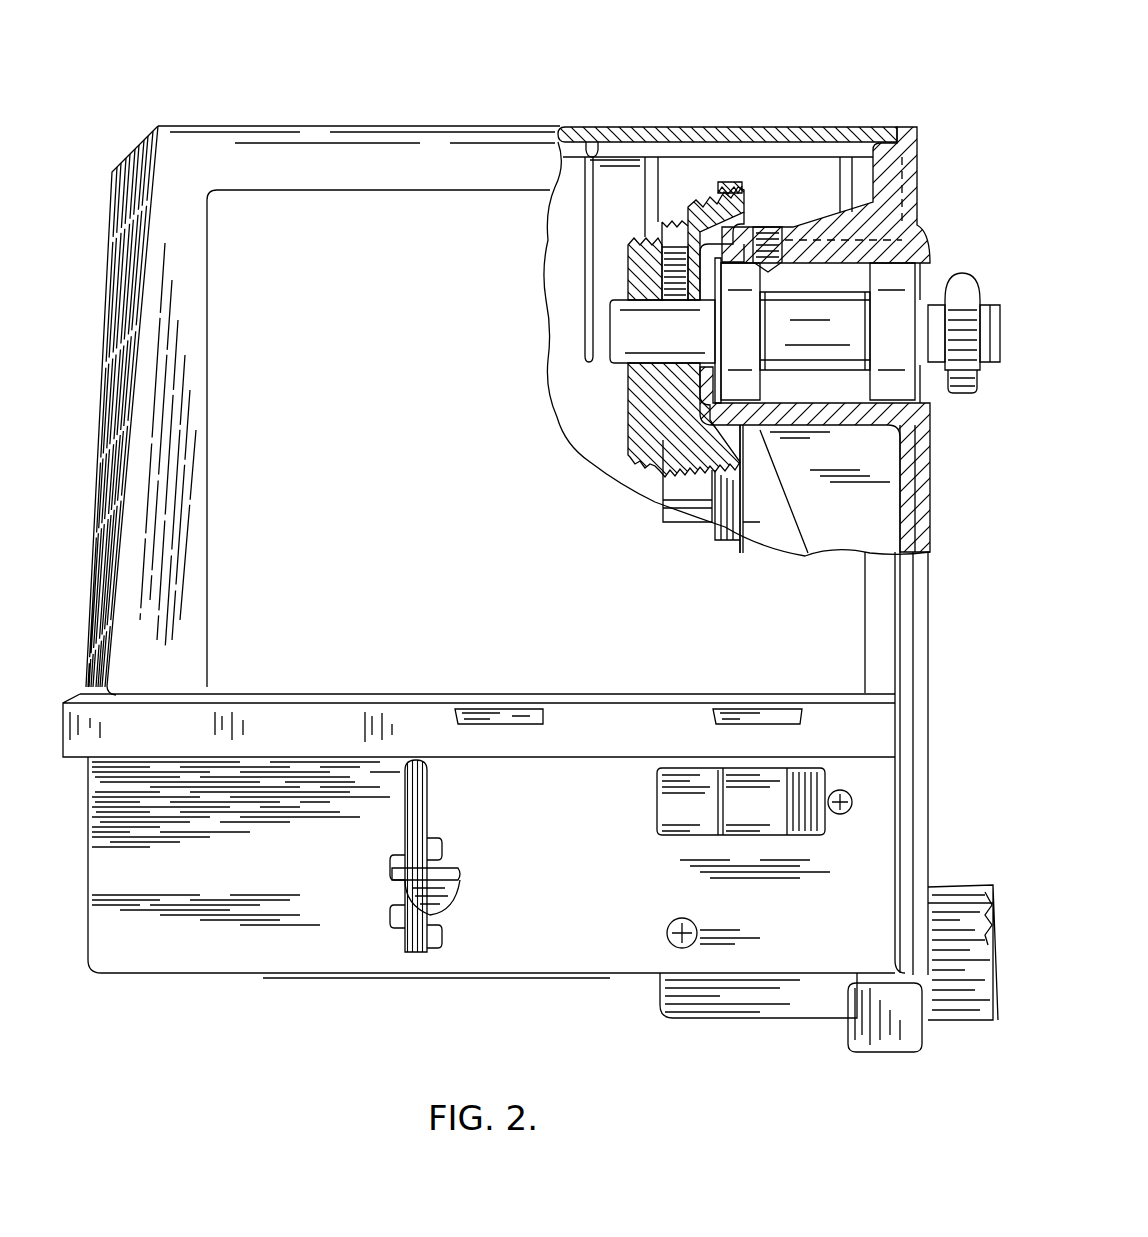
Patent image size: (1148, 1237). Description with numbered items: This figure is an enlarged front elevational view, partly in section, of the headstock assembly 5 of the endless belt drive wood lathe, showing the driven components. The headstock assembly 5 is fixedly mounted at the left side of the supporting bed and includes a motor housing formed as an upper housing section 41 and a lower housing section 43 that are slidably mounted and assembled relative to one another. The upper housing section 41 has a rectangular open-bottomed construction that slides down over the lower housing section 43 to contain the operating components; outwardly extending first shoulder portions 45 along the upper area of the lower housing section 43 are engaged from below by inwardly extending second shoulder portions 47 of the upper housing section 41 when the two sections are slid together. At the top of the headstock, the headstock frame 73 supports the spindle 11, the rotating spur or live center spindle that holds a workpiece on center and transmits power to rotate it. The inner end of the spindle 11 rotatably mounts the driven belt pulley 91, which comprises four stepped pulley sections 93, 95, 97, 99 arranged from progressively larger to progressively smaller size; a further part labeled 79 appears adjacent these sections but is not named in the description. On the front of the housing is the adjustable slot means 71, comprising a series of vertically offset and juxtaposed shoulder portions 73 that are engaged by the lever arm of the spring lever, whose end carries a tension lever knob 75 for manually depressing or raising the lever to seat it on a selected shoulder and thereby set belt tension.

The headstock assembly 5 is at (812, 115).
The spindle 11 is at (803, 337).
The upper housing section 41 is at (294, 669).
The lower housing section 43 is at (107, 975).
The first shoulder portions 45 is at (474, 720).
The second shoulder portions 47 is at (470, 733).
The adjustable slot means 71 is at (422, 945).
The shoulder portions 73 is at (428, 835).
The tension lever knob 75 is at (455, 882).
The teeth 79 is at (735, 187).
The driven belt pulley 91 is at (758, 212).
The stepped pulley section 93 is at (718, 190).
The stepped pulley section 95 is at (700, 200).
The stepped pulley section 97 is at (675, 224).
The stepped pulley section 99 is at (645, 238).